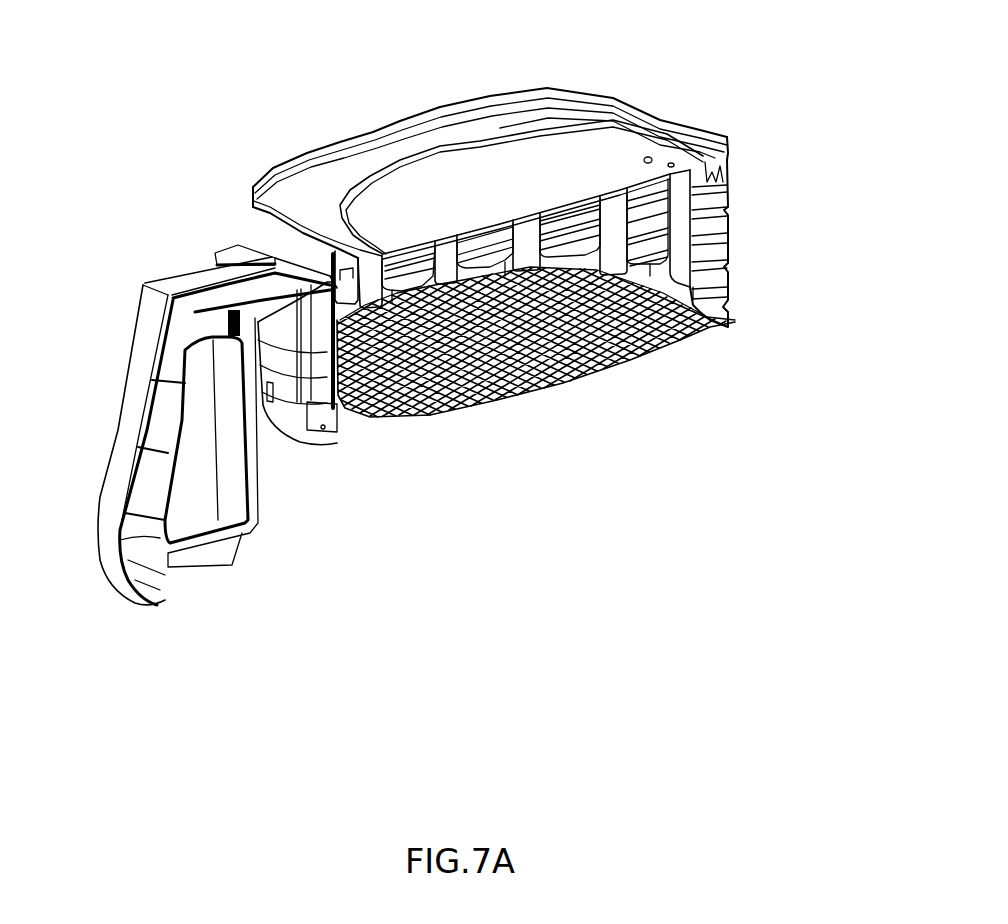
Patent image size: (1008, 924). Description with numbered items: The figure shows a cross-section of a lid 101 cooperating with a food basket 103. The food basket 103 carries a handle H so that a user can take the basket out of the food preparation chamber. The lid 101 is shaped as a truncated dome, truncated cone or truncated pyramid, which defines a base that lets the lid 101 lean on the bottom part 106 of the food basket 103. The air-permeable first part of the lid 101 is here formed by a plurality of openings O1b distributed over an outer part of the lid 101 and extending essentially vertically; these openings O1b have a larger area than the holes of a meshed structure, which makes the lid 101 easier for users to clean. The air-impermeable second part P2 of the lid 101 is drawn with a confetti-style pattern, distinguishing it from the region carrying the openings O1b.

The lid 101 is at (345, 168).
The air-impermeable second part P2 is at (545, 172).
The food basket 103 is at (730, 233).
The handle H is at (168, 275).
The bottom part 106 is at (362, 417).
The openings O1b is at (632, 263).